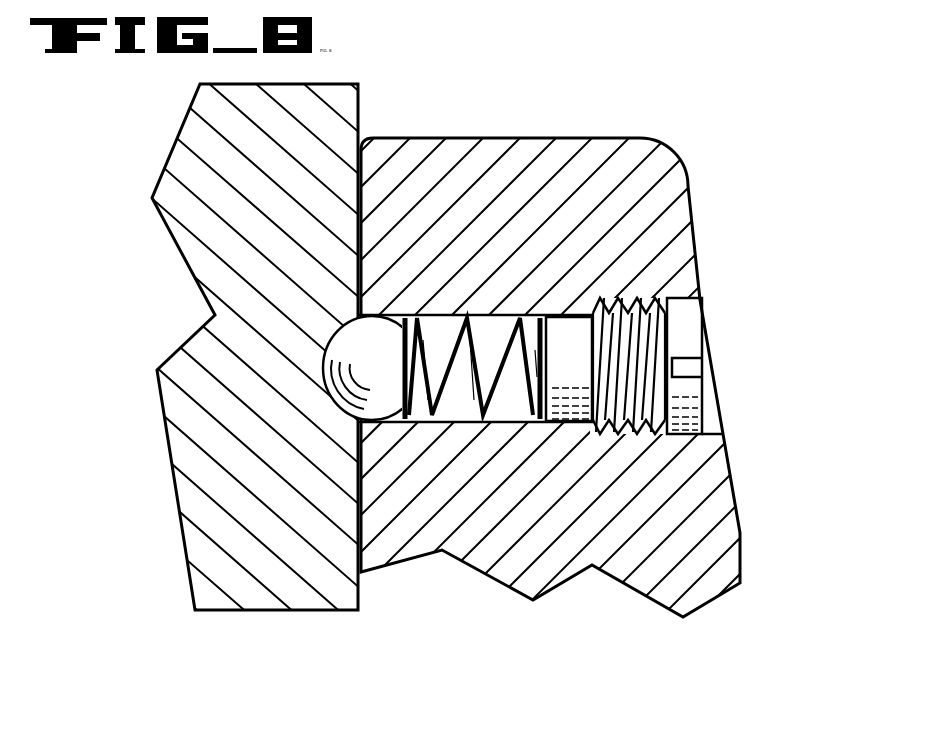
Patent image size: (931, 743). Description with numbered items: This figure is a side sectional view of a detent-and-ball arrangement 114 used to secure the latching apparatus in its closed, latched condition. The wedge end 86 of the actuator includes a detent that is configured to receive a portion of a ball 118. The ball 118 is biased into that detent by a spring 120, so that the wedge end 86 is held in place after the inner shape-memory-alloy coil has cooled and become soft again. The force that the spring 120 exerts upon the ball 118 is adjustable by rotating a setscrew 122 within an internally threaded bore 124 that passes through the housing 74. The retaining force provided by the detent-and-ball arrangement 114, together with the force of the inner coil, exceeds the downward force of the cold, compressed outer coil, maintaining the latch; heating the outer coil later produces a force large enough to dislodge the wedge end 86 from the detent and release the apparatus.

The housing 74 is at (458, 147).
The wedge end 86 is at (227, 482).
The detent-and-ball arrangement 114 is at (442, 347).
The ball 118 is at (357, 353).
The spring 120 is at (483, 407).
The setscrew 122 is at (683, 330).
The internally threaded bore 124 is at (713, 420).